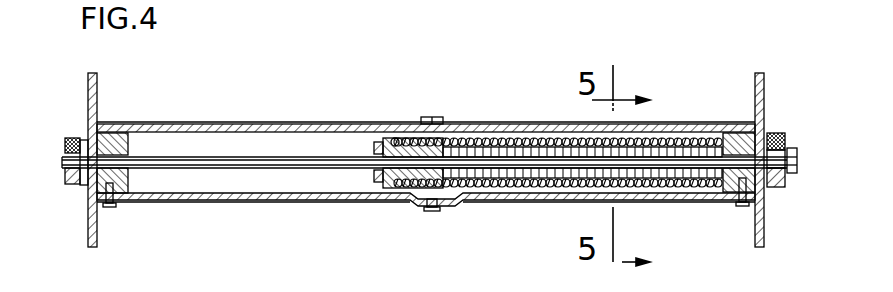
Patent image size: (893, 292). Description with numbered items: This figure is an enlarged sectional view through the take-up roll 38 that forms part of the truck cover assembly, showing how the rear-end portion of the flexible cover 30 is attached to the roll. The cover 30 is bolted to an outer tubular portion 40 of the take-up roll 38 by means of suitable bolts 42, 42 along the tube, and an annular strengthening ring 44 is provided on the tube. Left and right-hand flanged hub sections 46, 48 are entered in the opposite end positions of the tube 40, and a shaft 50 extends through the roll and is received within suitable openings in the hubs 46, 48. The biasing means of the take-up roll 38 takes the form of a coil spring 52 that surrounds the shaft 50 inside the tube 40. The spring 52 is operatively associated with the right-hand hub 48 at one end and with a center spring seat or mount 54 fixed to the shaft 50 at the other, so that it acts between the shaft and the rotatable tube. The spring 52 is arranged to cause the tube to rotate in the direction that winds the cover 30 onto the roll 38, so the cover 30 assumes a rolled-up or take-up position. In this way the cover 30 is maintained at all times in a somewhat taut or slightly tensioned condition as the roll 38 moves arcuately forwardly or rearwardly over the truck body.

The flexible cover 30 is at (333, 201).
The take-up roll 38 is at (230, 121).
The outer tubular portion 40 is at (258, 188).
The bolts 42 is at (114, 205).
The annular strengthening ring 44 is at (424, 118).
The left-hand flanged hub section 46 is at (100, 182).
The right-hand flanged hub section 48 is at (767, 178).
The shaft 50 is at (310, 157).
The coil spring 52 is at (492, 137).
The center spring seat 54 is at (384, 180).